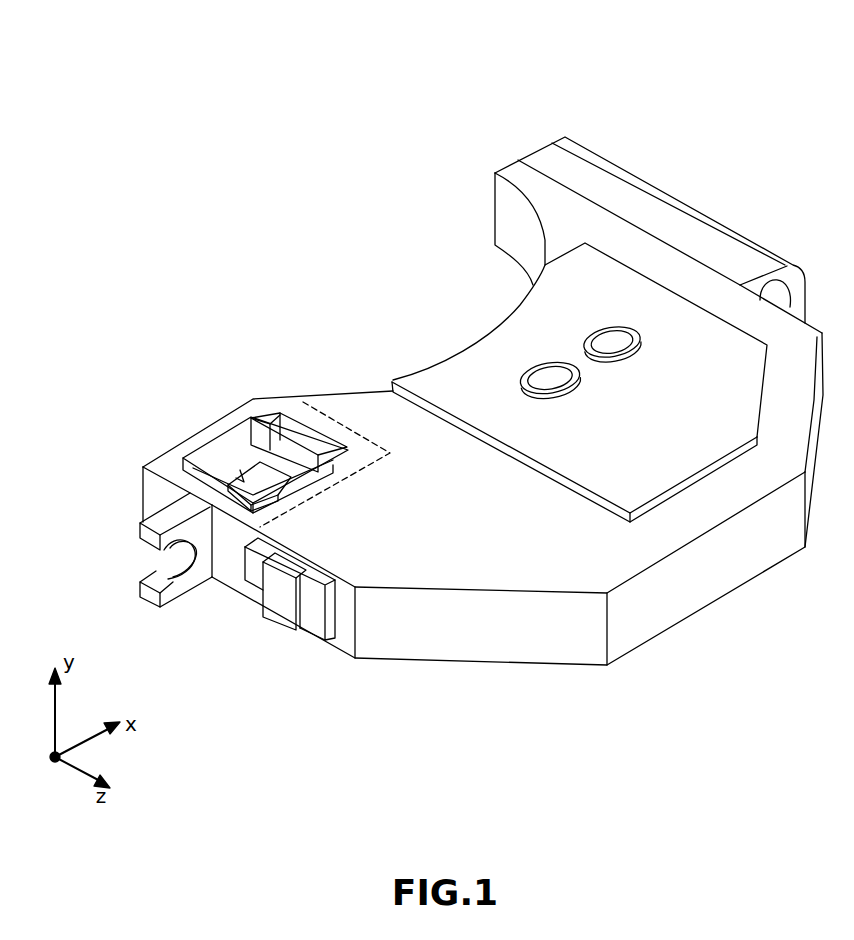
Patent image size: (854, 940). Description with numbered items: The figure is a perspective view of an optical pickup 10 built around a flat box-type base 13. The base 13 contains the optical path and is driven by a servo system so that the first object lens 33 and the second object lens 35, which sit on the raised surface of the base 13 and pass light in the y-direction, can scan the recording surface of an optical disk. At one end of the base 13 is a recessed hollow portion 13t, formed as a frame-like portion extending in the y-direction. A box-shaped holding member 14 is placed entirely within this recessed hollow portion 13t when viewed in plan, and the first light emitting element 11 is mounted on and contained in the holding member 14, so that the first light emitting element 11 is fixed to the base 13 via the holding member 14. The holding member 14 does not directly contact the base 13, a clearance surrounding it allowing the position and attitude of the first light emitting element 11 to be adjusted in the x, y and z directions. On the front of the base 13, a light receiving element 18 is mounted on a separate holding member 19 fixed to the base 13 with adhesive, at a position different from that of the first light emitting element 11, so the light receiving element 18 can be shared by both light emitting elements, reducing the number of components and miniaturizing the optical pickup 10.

The optical pickup 10 is at (630, 101).
The first light emitting element 11 is at (248, 455).
The base 13 is at (463, 650).
The recessed hollow portion 13t is at (313, 428).
The holding member 14 is at (295, 453).
The light receiving element 18 is at (279, 609).
The holding member 19 is at (312, 616).
The first object lens 33 is at (553, 399).
The second object lens 35 is at (622, 360).